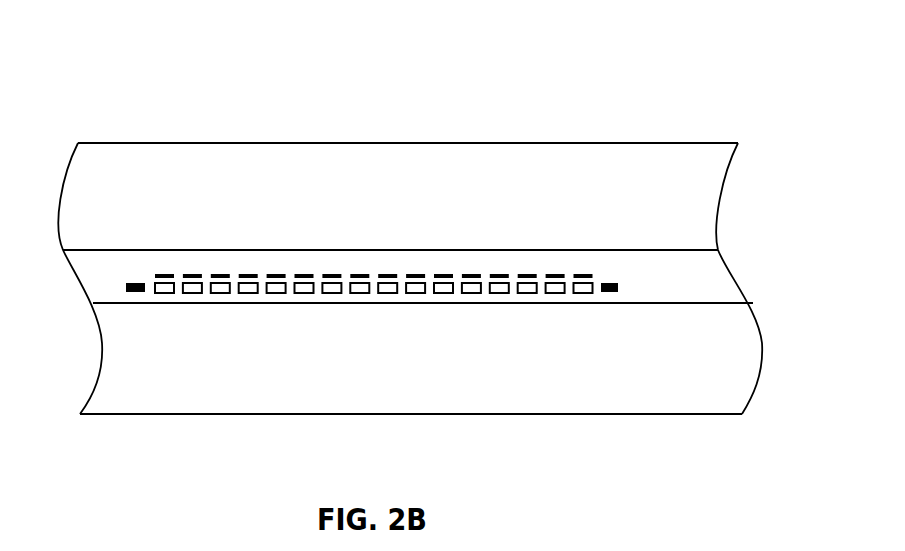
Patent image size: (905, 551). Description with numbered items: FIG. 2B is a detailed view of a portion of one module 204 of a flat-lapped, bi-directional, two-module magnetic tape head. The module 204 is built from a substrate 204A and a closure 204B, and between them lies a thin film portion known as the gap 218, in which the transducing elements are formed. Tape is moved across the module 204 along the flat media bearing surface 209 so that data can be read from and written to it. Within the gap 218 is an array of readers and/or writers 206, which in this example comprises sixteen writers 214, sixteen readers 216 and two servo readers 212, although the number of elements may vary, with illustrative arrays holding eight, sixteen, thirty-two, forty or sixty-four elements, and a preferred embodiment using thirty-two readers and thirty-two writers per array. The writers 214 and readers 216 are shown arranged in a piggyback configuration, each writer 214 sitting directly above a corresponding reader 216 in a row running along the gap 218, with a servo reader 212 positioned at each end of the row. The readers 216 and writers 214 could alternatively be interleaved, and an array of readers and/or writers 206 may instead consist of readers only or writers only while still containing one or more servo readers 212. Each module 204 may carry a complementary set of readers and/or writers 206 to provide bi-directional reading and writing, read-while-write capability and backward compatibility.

The module 204 is at (92, 108).
The substrate 204A is at (190, 143).
The closure 204B is at (243, 414).
The media bearing surface 209 is at (330, 213).
The writers 214 is at (497, 276).
The readers 216 is at (493, 294).
The servo readers 212 is at (128, 288).
The readers and/or writers 206 is at (640, 274).
The gap 218 is at (737, 275).